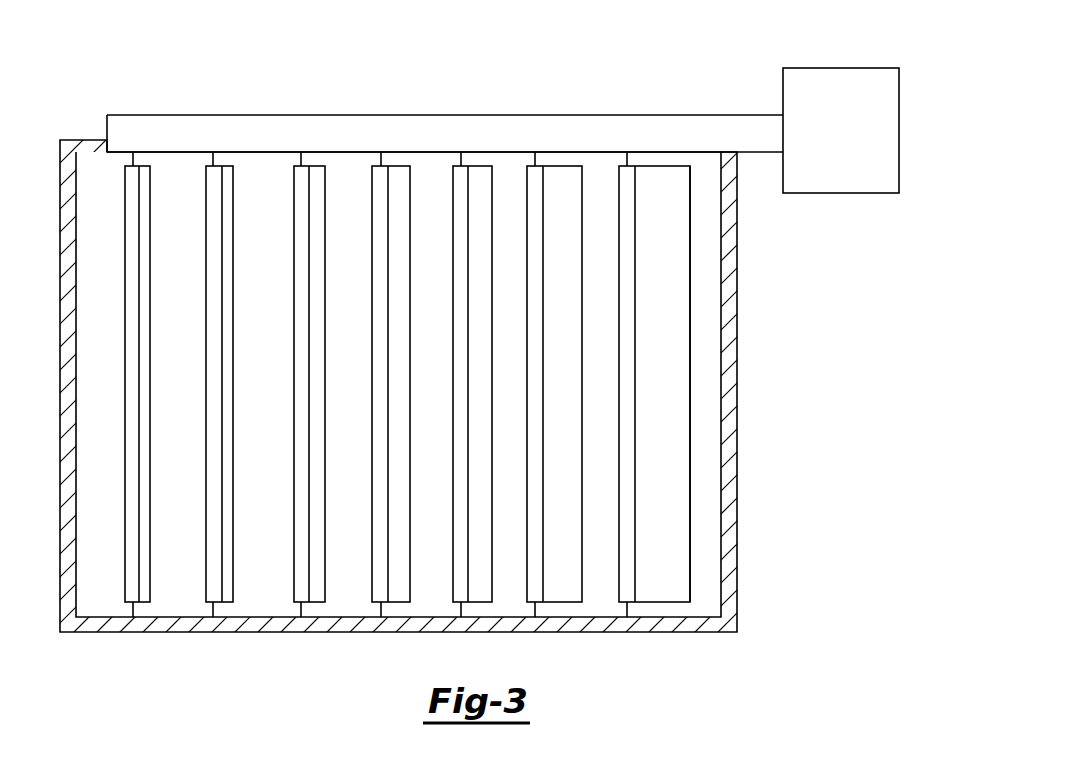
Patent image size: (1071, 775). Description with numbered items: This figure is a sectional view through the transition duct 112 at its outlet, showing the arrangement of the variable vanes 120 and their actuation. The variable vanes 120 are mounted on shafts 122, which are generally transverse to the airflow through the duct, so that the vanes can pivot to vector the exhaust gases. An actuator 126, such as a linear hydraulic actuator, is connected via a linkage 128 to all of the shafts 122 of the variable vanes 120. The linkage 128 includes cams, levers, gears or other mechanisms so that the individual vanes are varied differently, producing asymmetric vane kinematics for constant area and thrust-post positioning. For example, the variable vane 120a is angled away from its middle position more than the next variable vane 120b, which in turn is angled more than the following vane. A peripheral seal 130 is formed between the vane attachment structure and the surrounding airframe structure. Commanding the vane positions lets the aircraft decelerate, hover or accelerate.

The transition duct 112 is at (737, 470).
The variable vanes 120 is at (207, 197).
The variable vane 120a is at (665, 602).
The variable vane 120b is at (563, 602).
The shafts 122 is at (132, 160).
The actuator 126 is at (841, 68).
The linkage 128 is at (604, 115).
The peripheral seal 130 is at (690, 288).